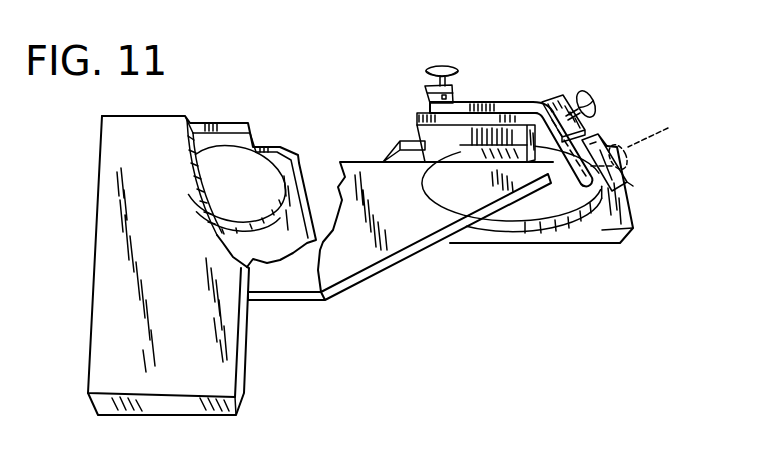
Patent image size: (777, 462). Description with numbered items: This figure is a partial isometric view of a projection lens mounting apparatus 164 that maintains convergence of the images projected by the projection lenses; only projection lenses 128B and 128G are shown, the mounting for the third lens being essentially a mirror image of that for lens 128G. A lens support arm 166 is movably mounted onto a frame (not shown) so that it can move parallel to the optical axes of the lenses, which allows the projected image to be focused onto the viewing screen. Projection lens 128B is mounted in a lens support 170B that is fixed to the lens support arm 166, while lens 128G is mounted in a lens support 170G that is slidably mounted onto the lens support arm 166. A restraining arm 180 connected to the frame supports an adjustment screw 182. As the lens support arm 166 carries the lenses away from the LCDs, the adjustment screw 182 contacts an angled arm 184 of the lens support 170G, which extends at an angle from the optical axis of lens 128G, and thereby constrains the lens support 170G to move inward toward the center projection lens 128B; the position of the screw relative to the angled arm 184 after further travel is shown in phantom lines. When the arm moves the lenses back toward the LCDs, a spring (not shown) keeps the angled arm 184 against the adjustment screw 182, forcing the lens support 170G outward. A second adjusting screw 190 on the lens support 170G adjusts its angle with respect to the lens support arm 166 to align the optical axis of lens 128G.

The mounting apparatus 164 is at (550, 322).
The lens support arm 166 is at (282, 302).
The lens support 170B is at (267, 143).
The lens support 170G is at (557, 243).
The projection lens 128B is at (212, 172).
The projection lens 128G is at (510, 213).
The restraining arm 180 is at (553, 102).
The adjustment screw 182 is at (585, 100).
The angled arm 184 is at (588, 140).
The second adjusting screw 190 is at (440, 60).